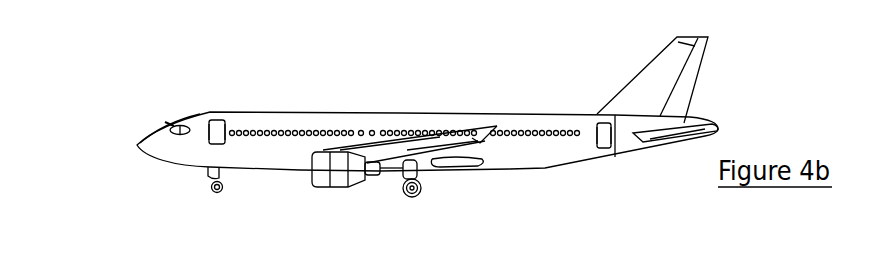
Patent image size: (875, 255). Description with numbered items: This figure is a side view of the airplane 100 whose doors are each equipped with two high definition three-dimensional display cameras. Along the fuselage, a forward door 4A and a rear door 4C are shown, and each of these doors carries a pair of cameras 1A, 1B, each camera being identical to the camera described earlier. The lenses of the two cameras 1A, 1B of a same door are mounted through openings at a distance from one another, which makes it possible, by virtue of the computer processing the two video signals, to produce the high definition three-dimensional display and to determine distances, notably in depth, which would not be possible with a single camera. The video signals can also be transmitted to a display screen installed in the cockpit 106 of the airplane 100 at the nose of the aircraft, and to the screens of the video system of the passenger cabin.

The airplane 100 is at (493, 112).
The cockpit 106 is at (136, 157).
The door 4A is at (220, 119).
The door 4C is at (605, 122).
The high definition 3D display camera 1A is at (226, 143).
The high definition 3D display camera 1B is at (213, 144).